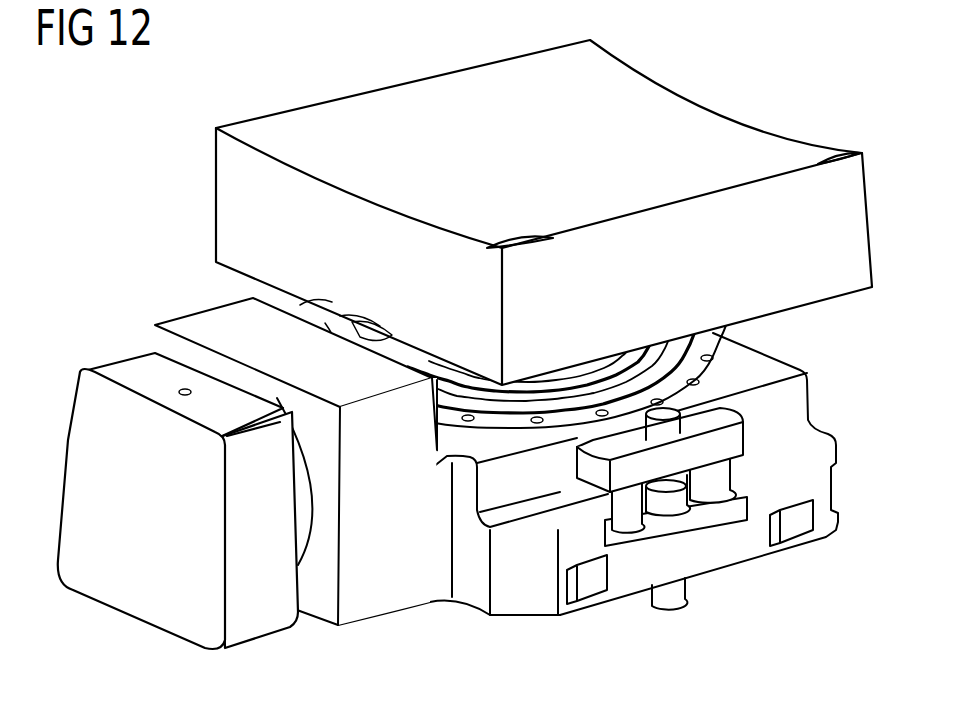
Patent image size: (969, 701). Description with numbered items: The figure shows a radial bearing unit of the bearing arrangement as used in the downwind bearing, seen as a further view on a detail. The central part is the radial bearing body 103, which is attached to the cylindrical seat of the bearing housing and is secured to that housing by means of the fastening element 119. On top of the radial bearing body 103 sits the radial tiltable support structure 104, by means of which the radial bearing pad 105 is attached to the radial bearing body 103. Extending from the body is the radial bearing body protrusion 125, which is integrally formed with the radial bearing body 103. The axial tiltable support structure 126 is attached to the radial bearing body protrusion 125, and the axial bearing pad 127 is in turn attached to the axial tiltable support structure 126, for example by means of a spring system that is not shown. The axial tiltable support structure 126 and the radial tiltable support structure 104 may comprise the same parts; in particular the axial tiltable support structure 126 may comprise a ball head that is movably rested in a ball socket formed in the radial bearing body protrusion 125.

The radial bearing body 103 is at (795, 405).
The radial tiltable support structure 104 is at (640, 365).
The radial bearing pad 105 is at (750, 142).
The fastening element 119 is at (680, 503).
The radial bearing body protrusion 125 is at (200, 323).
The axial tiltable support structure 126 is at (230, 377).
The axial bearing pad 127 is at (113, 373).